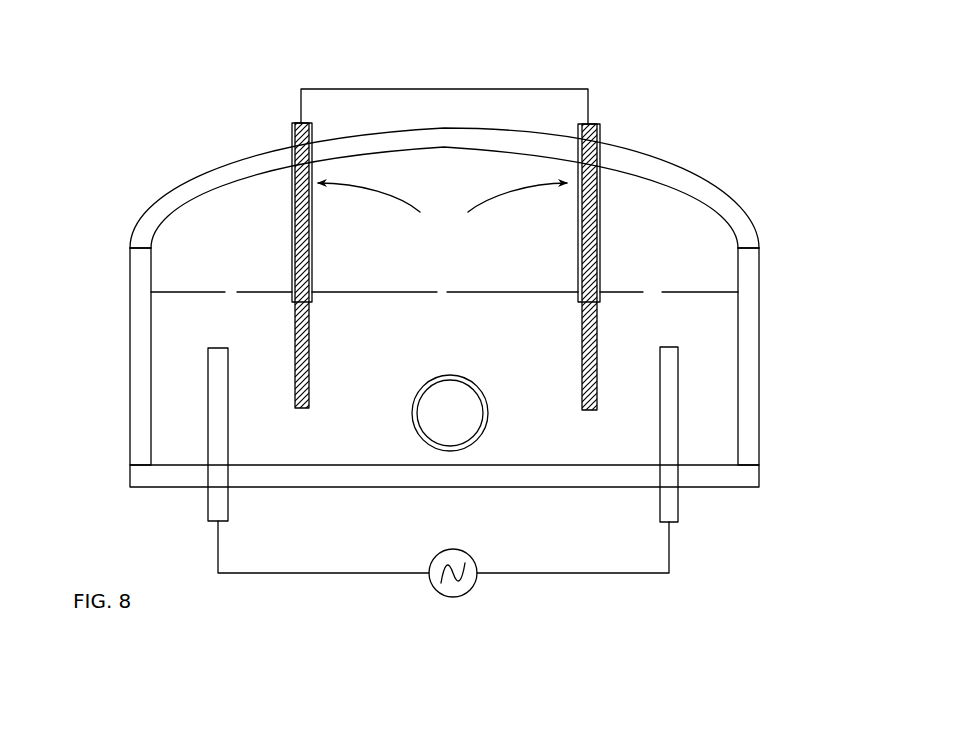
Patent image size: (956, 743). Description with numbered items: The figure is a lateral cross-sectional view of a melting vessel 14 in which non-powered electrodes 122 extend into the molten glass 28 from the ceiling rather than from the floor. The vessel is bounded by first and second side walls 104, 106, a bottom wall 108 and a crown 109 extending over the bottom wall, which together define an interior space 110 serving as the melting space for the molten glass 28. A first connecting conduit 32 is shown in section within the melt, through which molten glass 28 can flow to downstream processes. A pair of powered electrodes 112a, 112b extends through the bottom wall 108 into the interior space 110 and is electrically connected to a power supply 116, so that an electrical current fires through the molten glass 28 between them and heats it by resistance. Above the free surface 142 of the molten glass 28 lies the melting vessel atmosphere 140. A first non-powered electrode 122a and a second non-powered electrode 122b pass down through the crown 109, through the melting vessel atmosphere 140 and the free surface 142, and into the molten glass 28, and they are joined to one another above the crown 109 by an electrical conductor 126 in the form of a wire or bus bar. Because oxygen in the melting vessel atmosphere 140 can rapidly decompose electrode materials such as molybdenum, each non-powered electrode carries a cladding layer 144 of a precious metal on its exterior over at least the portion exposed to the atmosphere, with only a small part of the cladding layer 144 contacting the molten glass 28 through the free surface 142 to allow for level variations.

The melting vessel 14 is at (142, 163).
The molten glass 28 is at (374, 359).
The first connecting conduit 32 is at (450, 376).
The first side wall 104 is at (130, 275).
The second side wall 106 is at (759, 320).
The bottom wall 108 is at (325, 465).
The crown 109 is at (686, 173).
The interior space 110 is at (425, 328).
The first powered electrode 112a is at (210, 353).
The second powered electrode 112b is at (678, 355).
The power supply 116 is at (443, 596).
The non-powered electrodes 122 is at (442, 210).
The first non-powered electrode 122a is at (295, 393).
The second non-powered electrode 122b is at (598, 385).
The electrical conductor 126 is at (432, 89).
The melting vessel atmosphere 140 is at (656, 226).
The free surface 142 is at (340, 292).
The cladding layer 144 is at (292, 131).